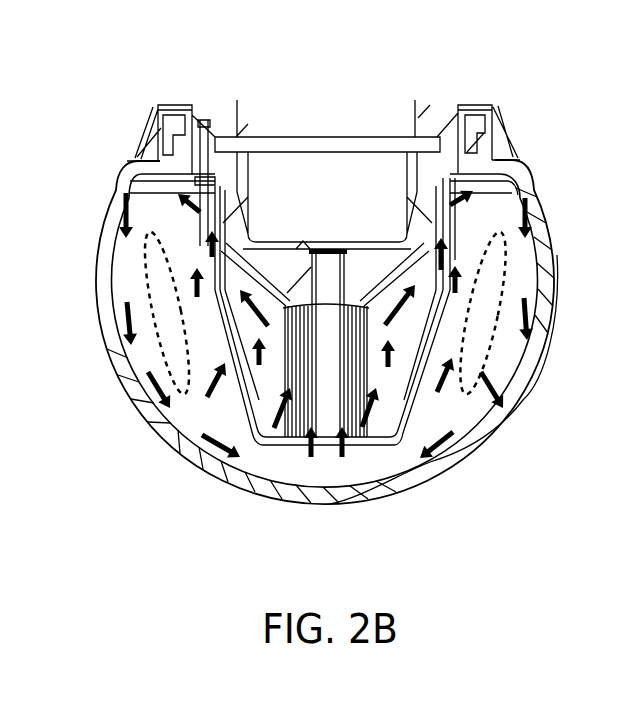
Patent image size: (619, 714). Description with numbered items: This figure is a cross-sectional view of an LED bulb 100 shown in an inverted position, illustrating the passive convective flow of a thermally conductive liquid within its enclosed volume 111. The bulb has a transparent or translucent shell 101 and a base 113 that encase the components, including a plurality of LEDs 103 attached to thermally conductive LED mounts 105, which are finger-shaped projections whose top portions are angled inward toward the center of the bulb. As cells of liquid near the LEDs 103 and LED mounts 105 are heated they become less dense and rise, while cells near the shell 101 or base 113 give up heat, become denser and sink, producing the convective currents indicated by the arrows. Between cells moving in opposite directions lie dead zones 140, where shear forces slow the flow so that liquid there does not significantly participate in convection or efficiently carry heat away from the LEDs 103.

The LED bulb 100 is at (529, 106).
The shell 101 is at (141, 427).
The LEDs 103 is at (205, 318).
The LED mounts 105 is at (200, 252).
The enclosed volume 111 is at (328, 461).
The base 113 is at (211, 122).
The dead zones 140 is at (168, 378).